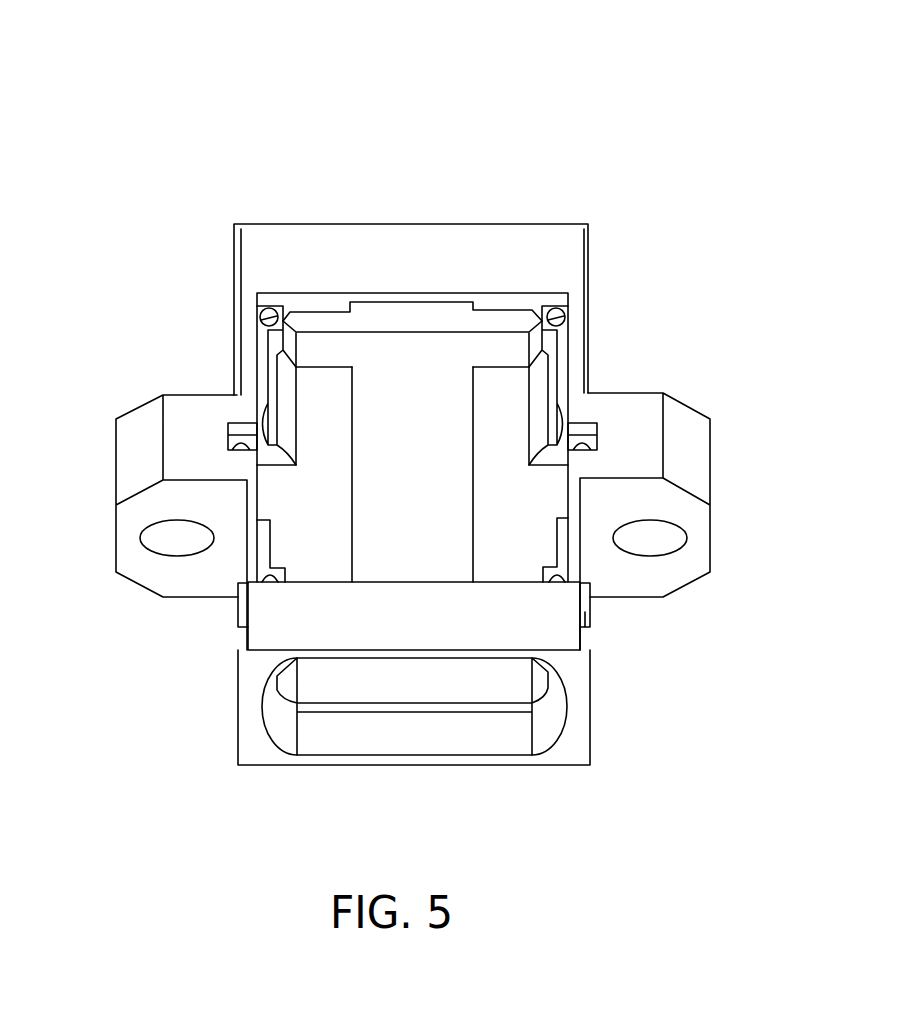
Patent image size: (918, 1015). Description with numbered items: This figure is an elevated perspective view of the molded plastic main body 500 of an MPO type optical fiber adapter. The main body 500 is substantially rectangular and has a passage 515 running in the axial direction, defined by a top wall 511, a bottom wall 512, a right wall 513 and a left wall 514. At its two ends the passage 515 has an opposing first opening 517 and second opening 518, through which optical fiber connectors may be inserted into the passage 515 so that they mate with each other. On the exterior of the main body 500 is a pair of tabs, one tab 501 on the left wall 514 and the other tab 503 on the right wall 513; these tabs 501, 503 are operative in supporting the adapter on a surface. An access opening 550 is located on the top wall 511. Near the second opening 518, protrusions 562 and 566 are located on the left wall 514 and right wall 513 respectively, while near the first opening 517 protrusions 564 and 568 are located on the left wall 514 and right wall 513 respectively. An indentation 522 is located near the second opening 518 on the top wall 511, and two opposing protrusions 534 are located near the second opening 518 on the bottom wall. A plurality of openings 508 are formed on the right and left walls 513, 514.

The main body 500 is at (441, 78).
The tab 501 is at (187, 415).
The tab 503 is at (638, 458).
The openings 508 is at (268, 310).
The top wall 511 is at (300, 627).
The bottom wall 512 is at (457, 527).
The right wall 513 is at (583, 617).
The left wall 514 is at (240, 300).
The passage 515 is at (425, 380).
The first opening 517 is at (422, 687).
The second opening 518 is at (465, 320).
The indentation 522 is at (397, 303).
The protrusions 534 is at (313, 385).
The access opening 550 is at (373, 490).
The protrusion 562 is at (287, 388).
The protrusion 564 is at (263, 552).
The protrusion 566 is at (537, 394).
The protrusion 568 is at (563, 557).